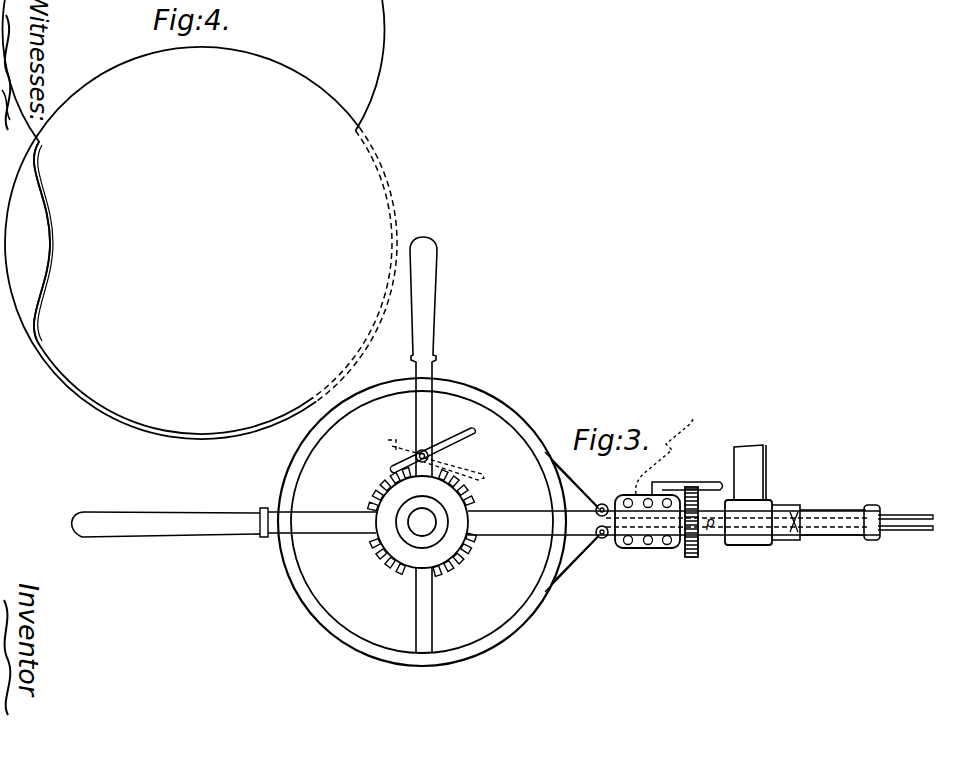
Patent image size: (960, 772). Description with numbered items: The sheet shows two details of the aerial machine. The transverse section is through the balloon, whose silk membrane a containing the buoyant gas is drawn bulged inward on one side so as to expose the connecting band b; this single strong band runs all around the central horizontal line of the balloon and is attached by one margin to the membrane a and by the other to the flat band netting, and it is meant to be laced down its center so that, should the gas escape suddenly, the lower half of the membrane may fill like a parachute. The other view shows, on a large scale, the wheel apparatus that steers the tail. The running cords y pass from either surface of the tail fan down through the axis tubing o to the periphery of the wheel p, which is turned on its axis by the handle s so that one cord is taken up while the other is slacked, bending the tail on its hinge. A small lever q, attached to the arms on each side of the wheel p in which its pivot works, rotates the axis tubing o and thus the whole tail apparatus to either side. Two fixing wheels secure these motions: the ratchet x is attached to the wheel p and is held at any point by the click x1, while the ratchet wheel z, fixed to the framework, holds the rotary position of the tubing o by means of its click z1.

In FIG. 4, the balloon membrane a is at (200, 219).
In FIG. 4, the connecting band b is at (38, 268).
In FIG. 3, the wheel p is at (422, 522).
In FIG. 3, the small lever q is at (423, 445).
In FIG. 3, the handle s is at (476, 522).
In FIG. 3, the ratchet wheel x is at (446, 492).
In FIG. 3, the click x1 is at (436, 452).
In FIG. 3, the running cord y is at (739, 522).
In FIG. 3, the ratchet wheel z is at (690, 532).
In FIG. 3, the click z1 is at (679, 456).
In FIG. 3, the axis tubing o is at (840, 516).